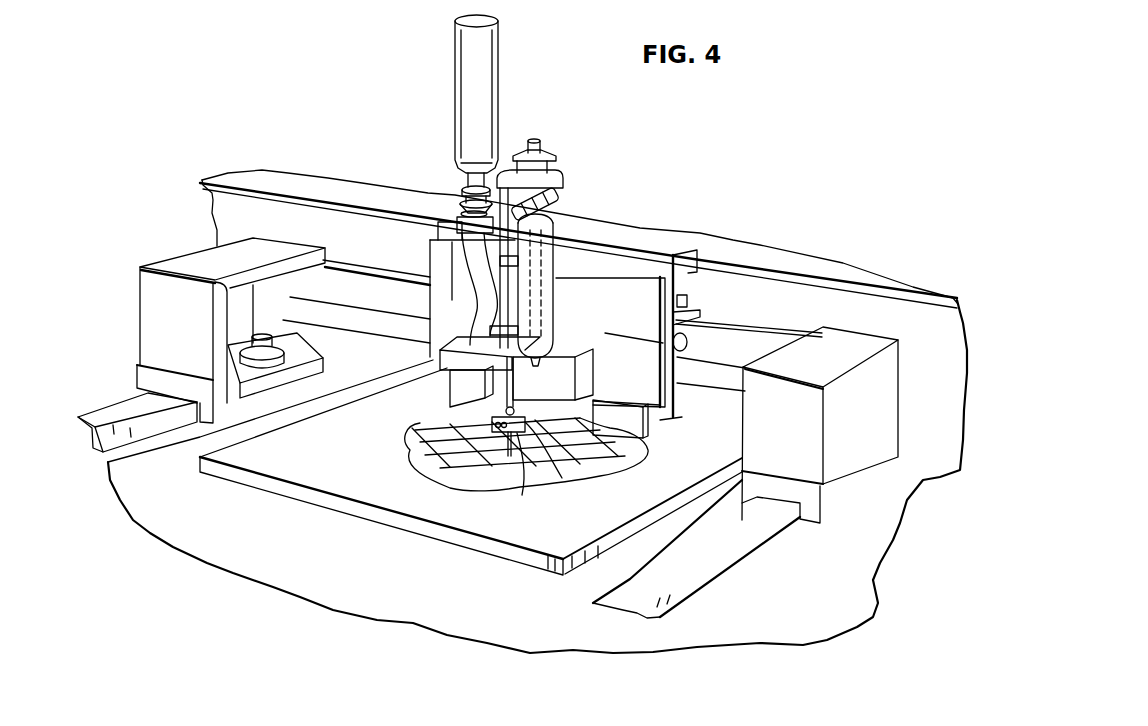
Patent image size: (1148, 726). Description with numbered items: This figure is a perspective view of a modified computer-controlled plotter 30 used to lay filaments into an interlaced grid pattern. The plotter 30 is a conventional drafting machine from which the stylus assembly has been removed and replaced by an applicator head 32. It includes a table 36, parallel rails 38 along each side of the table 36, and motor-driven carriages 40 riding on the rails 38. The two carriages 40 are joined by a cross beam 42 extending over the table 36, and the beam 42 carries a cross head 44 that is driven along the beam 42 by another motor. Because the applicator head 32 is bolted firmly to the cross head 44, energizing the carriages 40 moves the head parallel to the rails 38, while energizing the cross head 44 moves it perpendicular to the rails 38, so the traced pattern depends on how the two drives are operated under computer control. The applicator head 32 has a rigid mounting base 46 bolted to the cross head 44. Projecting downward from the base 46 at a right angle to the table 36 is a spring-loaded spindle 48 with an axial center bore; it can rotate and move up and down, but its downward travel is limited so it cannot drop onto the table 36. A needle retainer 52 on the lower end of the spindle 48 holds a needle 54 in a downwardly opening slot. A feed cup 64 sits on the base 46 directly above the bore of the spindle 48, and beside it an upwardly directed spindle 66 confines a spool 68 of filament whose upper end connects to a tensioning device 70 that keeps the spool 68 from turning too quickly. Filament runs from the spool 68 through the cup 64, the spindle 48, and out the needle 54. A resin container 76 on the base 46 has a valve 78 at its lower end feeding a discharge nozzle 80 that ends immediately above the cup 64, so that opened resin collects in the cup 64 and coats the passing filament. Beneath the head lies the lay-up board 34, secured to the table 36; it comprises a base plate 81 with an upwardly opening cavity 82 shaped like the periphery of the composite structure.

The plotter 30 is at (320, 169).
The applicator head 32 is at (450, 357).
The lay-up board 34 is at (471, 471).
The table 36 is at (312, 570).
The parallel rails 38 is at (110, 410).
The motor-driven carriages 40 is at (184, 262).
The cross beam 42 is at (370, 340).
The cross head 44 is at (628, 283).
The rigid mounting base 46 is at (570, 381).
The spindle 48 is at (515, 412).
The needle retainer 52 is at (562, 478).
The needle 54 is at (522, 495).
The feed cup 64 is at (518, 332).
The upwardly directed spindle 66 is at (548, 284).
The spool 68 is at (555, 225).
The tensioning device 70 is at (548, 193).
The resin container 76 is at (463, 61).
The valve 78 is at (468, 197).
The discharge nozzle 80 is at (463, 310).
The base plate 81 is at (430, 508).
The cavity 82 is at (421, 441).